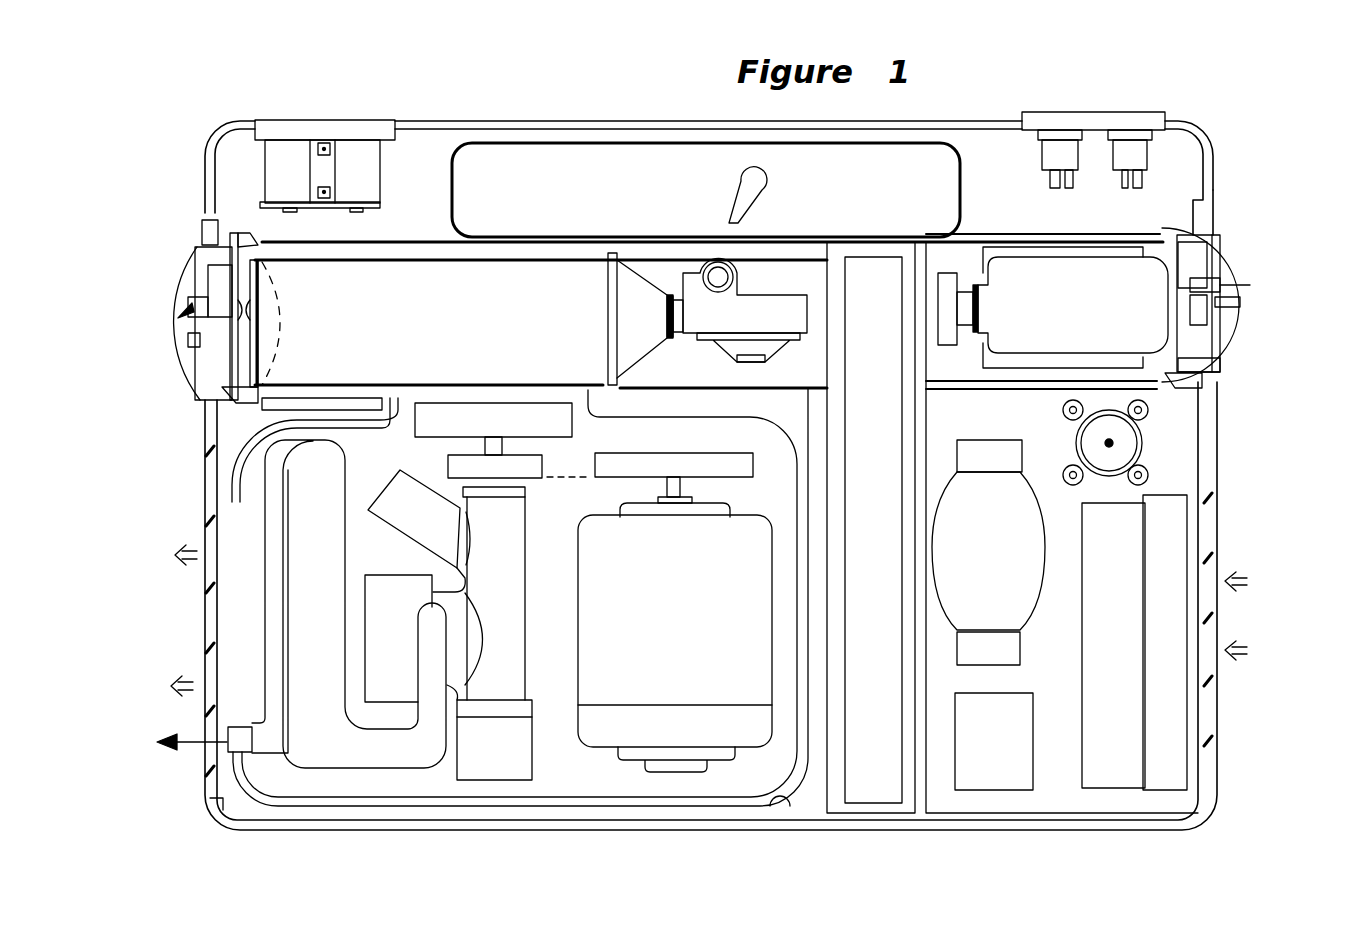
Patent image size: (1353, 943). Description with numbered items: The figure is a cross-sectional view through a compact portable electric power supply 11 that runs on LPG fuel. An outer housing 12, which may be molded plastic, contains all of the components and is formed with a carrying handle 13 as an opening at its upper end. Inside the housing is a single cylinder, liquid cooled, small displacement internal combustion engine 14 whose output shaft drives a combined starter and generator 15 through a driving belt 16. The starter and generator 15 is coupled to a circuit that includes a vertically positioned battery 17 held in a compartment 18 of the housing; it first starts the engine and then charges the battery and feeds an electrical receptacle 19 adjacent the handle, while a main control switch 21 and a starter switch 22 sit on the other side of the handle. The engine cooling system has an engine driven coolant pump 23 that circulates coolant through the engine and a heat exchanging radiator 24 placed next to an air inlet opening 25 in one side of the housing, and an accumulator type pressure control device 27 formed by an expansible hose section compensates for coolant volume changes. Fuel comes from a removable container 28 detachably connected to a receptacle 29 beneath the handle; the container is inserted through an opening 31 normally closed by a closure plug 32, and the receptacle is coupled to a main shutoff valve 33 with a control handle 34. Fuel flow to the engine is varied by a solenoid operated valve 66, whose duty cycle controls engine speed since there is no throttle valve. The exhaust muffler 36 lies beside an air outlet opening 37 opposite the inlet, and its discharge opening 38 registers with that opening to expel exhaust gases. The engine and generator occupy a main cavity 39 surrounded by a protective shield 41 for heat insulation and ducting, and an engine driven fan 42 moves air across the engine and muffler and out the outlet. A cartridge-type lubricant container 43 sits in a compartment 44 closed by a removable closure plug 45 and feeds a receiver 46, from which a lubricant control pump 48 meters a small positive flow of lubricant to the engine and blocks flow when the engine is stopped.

The portable power supply 11 is at (1252, 118).
The outer housing 12 is at (921, 121).
The carrying handle 13 is at (613, 153).
The internal combustion engine 14 is at (540, 572).
The combined starter and generator 15 is at (675, 773).
The driving belt 16 is at (568, 453).
The battery 17 is at (880, 800).
The compartment 18 is at (832, 773).
The receptacle 19 is at (372, 118).
The main control switch 21 is at (1078, 158).
The starter switch 22 is at (1147, 158).
The coolant pump 23 is at (480, 780).
The heat exchanging radiator 24 is at (1100, 790).
The air inlet opening 25 is at (1207, 517).
The accumulator type pressure control device 27 is at (1037, 603).
The removable container 28 is at (626, 268).
The receptacle 29 is at (672, 333).
The opening 31 is at (190, 395).
The closure plug 32 is at (178, 352).
The main shutoff valve 33 is at (684, 275).
The control handle 34 is at (767, 190).
The muffler 36 is at (263, 597).
The air outlet opening 37 is at (215, 618).
The discharge opening 38 is at (228, 753).
The main cavity 39 is at (787, 812).
The protective shield 41 is at (232, 482).
The engine driven fan 42 is at (413, 430).
The lubricant container 43 is at (1185, 222).
The compartment 44 is at (948, 367).
The removable closure plug 45 is at (1240, 268).
The receiver 46 is at (950, 273).
The lubricant control pump 48 is at (1143, 446).
The solenoid operated valve 66 is at (968, 790).